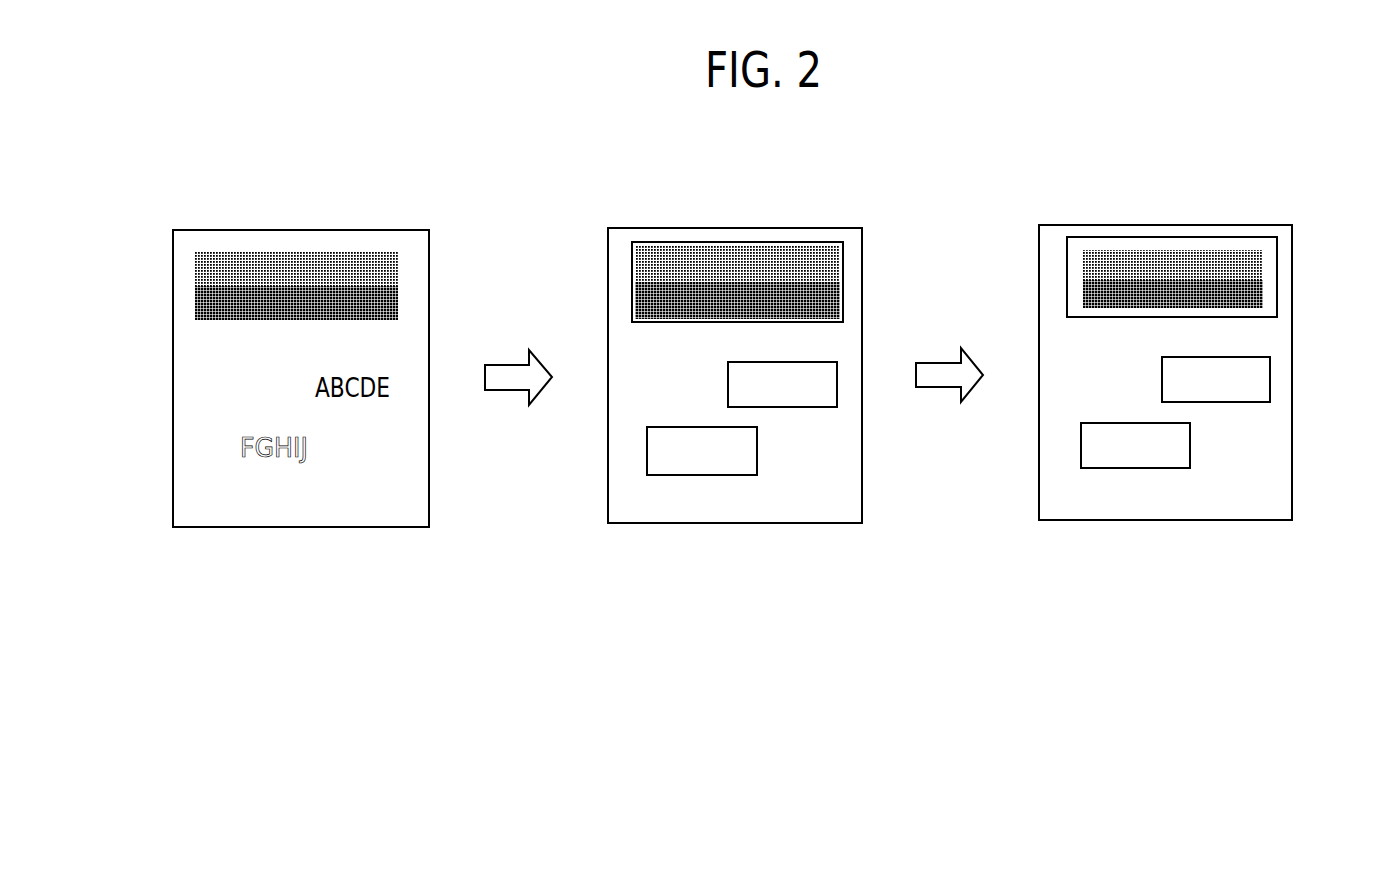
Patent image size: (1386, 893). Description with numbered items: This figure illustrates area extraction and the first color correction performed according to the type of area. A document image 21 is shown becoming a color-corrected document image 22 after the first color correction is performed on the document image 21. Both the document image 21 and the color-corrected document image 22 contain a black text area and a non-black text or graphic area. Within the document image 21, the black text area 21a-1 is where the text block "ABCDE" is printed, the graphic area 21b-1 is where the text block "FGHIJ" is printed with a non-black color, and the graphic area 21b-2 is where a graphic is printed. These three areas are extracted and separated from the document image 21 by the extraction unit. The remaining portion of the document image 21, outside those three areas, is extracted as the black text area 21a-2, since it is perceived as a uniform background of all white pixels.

The document image 21 is at (398, 229).
The color-corrected document image 22 is at (1258, 224).
The black text area 21a-1 is at (793, 407).
The black text area 21a-2 is at (853, 465).
The graphic area 21b-1 is at (725, 475).
The graphic area 21b-2 is at (678, 323).